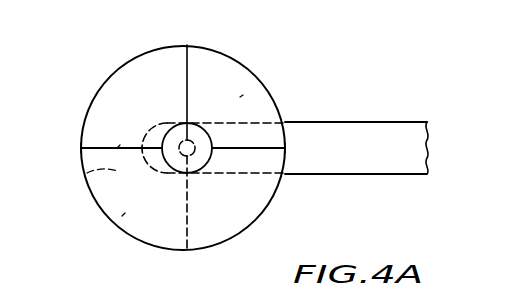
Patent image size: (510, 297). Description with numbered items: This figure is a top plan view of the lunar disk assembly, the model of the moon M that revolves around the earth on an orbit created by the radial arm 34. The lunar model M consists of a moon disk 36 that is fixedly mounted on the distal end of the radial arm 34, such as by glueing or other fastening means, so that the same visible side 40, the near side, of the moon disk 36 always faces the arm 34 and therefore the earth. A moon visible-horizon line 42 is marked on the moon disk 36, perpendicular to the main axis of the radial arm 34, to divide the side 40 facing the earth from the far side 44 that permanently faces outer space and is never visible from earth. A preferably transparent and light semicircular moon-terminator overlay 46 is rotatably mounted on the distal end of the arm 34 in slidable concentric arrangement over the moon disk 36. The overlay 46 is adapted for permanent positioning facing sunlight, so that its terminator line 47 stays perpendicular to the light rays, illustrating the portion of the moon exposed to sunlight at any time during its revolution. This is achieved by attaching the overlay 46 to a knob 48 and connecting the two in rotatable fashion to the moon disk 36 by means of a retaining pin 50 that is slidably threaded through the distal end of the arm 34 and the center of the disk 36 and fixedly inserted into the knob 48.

The radial arm 34 is at (400, 135).
The moon disk 36 is at (102, 84).
The visible side 40 is at (240, 97).
The moon visible-horizon line 42 is at (192, 67).
The far side 44 is at (84, 175).
The moon-terminator overlay 46 is at (125, 213).
The terminator line 47 is at (118, 146).
The knob 48 is at (180, 153).
The retaining pin 50 is at (183, 143).
The model of the moon M is at (293, 102).